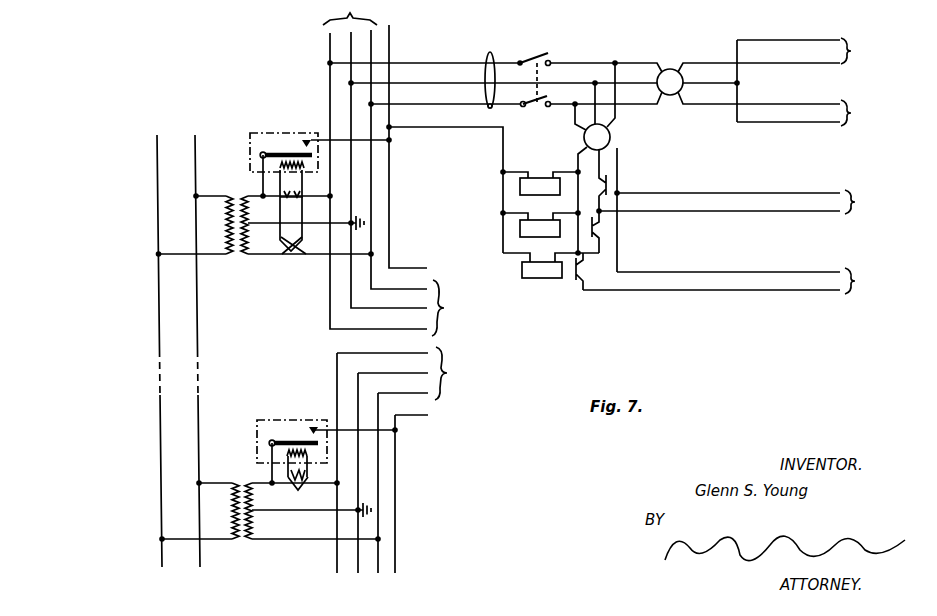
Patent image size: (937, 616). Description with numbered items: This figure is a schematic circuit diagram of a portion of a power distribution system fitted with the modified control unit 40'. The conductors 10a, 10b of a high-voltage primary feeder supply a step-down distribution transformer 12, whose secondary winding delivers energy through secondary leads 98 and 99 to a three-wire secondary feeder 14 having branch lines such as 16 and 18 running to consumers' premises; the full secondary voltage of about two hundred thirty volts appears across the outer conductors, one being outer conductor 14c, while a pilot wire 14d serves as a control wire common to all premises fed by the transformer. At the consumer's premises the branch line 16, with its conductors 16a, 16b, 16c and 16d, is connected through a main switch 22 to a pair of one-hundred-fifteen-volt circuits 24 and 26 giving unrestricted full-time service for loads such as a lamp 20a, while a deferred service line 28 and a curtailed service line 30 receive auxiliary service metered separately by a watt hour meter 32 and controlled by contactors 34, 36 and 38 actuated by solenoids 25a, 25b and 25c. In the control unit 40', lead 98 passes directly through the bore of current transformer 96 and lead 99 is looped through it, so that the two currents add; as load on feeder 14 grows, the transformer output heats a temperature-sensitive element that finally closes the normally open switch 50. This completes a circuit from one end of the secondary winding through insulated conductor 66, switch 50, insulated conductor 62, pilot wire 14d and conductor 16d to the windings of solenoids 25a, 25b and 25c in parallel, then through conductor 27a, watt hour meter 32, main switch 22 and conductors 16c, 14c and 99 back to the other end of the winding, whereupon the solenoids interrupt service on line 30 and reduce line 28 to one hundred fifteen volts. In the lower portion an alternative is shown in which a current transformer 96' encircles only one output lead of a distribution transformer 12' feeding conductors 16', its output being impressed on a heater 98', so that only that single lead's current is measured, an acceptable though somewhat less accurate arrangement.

The conductor of primary feeder 10a is at (157, 155).
The conductor of primary feeder 10b is at (195, 155).
The step-down distribution transformer 12 is at (266, 238).
The distribution transformer 12' is at (271, 523).
The secondary feeder 14 is at (375, 164).
The outer conductor of secondary feeder 14c is at (373, 200).
The pilot wire 14d is at (391, 40).
The branch line 16 is at (492, 72).
The conductor 16a is at (458, 63).
The conductor 16b is at (458, 83).
The conductor 16c is at (457, 104).
The conductor 16d is at (468, 127).
The conductors 16' is at (394, 460).
The branch line 18 is at (452, 308).
The lamp 20a is at (671, 72).
The main switch 22 is at (553, 58).
The 115 v. circuit 24 is at (805, 80).
The solenoid 25a is at (523, 186).
The solenoid 25b is at (525, 228).
The solenoid 25c is at (527, 270).
The 115 v. circuit 26 is at (805, 113).
The conductor 27a is at (577, 157).
The deferred service line 28 is at (739, 210).
The curtailed service line 30 is at (732, 281).
The watt hour meter 32 is at (611, 137).
The contactor 34 is at (608, 183).
The contactor 36 is at (598, 232).
The contactor 38 is at (575, 286).
The control unit 40' is at (283, 282).
The switch 50 is at (303, 139).
The insulated conductor 62 is at (390, 143).
The insulated conductor 66 is at (262, 182).
The current transformer 96 is at (279, 210).
The secondary lead 98 is at (305, 207).
The secondary lead 99 is at (318, 256).
The current transformer 96' is at (285, 481).
The heater 98' is at (309, 478).